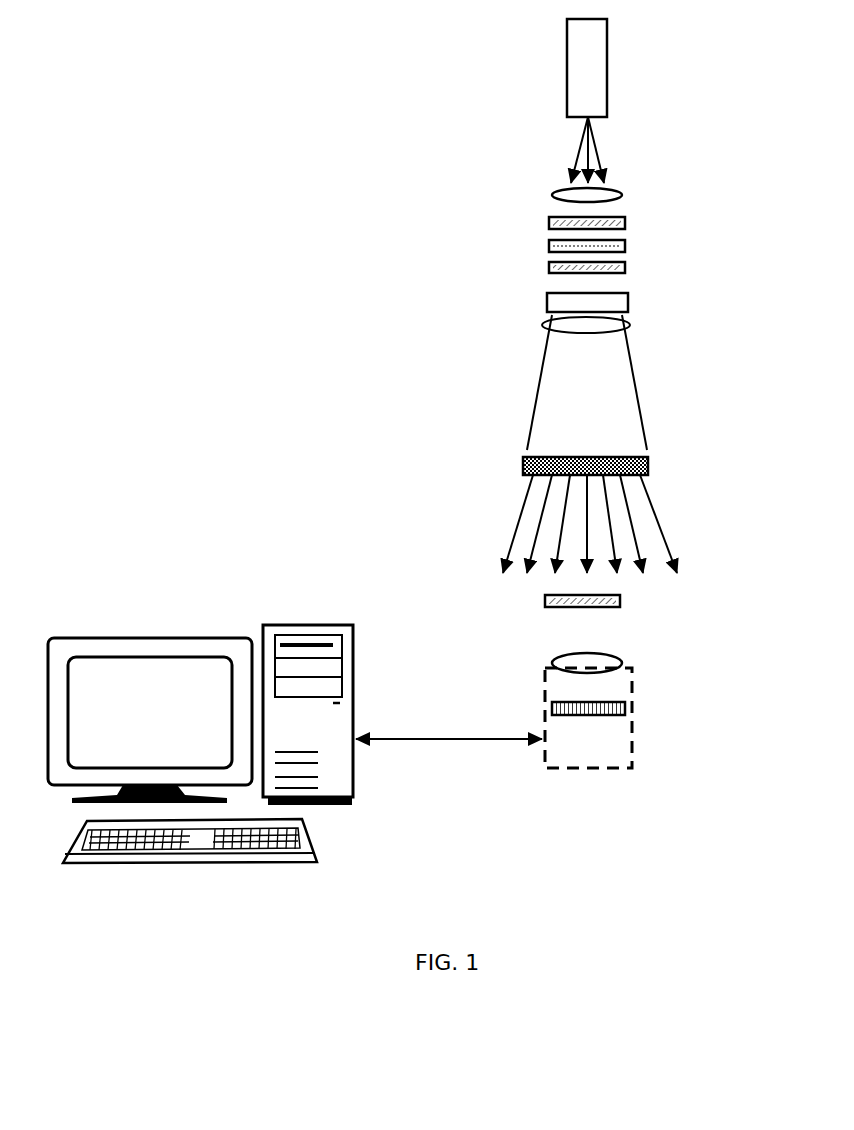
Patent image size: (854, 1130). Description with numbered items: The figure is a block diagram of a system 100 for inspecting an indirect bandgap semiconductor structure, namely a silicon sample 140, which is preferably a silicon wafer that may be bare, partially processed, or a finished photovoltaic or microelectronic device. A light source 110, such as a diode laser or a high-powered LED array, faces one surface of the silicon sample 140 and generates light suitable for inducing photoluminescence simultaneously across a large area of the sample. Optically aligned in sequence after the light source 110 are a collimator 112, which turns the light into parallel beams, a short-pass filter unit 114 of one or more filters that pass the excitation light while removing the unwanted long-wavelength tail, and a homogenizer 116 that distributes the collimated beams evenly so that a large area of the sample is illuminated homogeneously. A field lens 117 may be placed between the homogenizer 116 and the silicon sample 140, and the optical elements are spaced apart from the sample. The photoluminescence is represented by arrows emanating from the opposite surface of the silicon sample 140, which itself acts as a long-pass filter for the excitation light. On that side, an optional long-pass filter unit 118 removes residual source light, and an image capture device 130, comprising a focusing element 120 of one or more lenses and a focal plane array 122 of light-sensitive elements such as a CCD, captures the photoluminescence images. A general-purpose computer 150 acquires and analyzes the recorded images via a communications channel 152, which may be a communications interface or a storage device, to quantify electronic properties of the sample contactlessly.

The system 100 is at (213, 207).
The light source 110 is at (607, 72).
The collimator 112 is at (620, 193).
The short-pass filter unit 114 is at (537, 215).
The homogenizer 116 is at (628, 305).
The field lens 117 is at (627, 323).
The long-pass filter unit 118 is at (545, 600).
The focusing element 120 is at (622, 665).
The focal plane array 122 is at (625, 703).
The image capture device 130 is at (632, 747).
The silicon sample 140 is at (648, 463).
The general-purpose computer 150 is at (284, 612).
The communications channel 152 is at (408, 735).